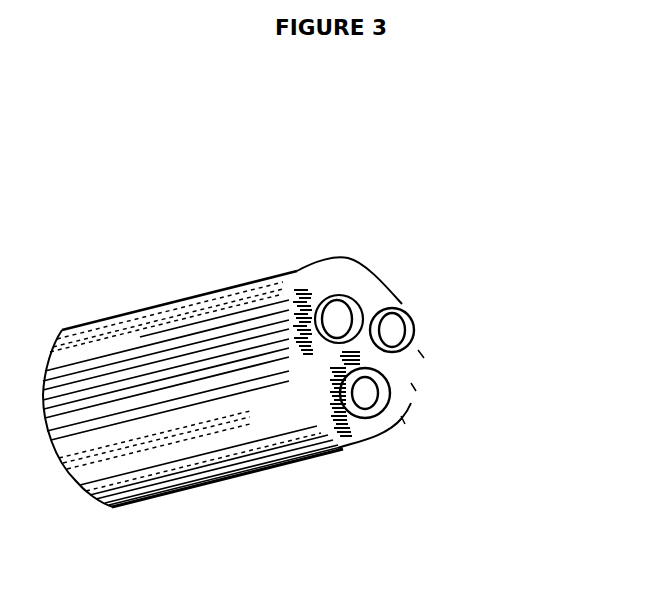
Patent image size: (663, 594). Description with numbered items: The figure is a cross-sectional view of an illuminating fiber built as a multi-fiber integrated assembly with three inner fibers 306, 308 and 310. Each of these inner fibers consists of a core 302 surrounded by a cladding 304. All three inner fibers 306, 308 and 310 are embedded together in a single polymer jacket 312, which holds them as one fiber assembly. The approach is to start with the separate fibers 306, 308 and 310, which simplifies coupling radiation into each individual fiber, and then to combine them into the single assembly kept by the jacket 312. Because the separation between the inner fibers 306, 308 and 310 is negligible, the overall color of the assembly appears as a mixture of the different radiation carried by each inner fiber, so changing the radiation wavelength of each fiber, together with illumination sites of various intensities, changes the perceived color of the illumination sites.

The core 302 is at (400, 338).
The cladding 304 is at (404, 308).
The inner fiber 306 is at (400, 370).
The inner fiber 308 is at (308, 293).
The inner fiber 310 is at (345, 430).
The polymer jacket 312 is at (362, 266).